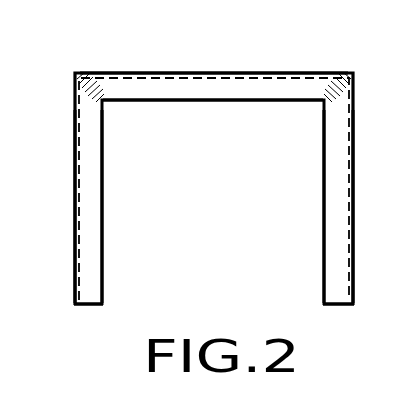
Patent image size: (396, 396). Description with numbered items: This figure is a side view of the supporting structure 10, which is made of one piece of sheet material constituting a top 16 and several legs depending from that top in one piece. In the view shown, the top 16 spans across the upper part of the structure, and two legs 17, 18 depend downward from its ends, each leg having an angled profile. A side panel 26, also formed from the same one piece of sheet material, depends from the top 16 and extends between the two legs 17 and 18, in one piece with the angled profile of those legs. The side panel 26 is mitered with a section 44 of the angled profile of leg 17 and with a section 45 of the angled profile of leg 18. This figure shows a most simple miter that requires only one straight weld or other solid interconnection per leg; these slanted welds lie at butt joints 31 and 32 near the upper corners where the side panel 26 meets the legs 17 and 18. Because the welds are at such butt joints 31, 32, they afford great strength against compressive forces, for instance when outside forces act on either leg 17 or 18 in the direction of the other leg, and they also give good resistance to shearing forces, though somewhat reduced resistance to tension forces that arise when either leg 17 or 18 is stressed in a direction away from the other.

The supporting structure 10 is at (340, 70).
The top 16 is at (197, 71).
The leg 17 is at (93, 212).
The leg 18 is at (330, 207).
The side panel 26 is at (228, 92).
The butt joint 31 is at (86, 102).
The butt joint 32 is at (332, 92).
The section of angled profile 44 is at (91, 283).
The section of angled profile 45 is at (337, 285).